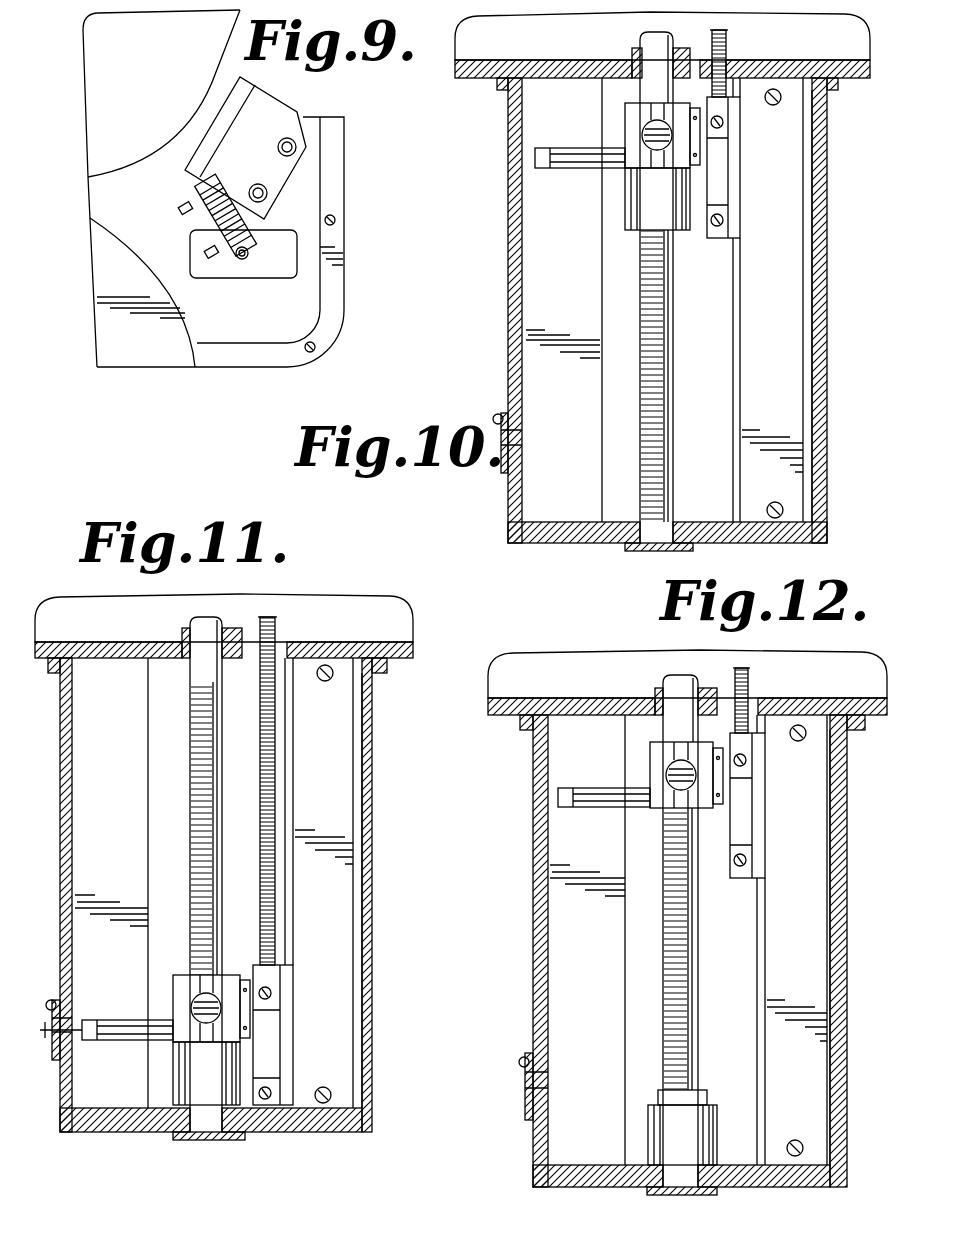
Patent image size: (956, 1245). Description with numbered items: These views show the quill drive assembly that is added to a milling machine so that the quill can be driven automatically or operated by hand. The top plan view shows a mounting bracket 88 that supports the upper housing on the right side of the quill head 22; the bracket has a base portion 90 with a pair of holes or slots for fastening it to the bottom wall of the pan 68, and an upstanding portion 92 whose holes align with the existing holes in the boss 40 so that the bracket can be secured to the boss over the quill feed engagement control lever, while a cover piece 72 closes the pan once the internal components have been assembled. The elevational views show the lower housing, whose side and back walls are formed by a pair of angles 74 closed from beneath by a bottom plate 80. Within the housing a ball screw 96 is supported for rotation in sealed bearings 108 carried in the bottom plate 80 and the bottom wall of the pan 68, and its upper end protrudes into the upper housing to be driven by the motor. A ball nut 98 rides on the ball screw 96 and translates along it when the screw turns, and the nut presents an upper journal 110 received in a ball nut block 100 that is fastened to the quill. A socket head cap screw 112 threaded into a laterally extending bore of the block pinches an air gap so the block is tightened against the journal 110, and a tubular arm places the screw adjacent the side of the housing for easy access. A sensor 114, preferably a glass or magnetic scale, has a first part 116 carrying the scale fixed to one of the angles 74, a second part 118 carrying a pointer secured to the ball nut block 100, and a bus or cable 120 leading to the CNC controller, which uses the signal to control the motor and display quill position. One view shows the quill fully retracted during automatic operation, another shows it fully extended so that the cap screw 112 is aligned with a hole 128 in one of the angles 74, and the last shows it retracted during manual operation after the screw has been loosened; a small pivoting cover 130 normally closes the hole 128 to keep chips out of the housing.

In FIG. 9, the quill head 22 is at (76, 33).
In FIG. 9, the boss 40 is at (200, 117).
In FIG. 9, the pan 68 is at (345, 337).
In FIG. 10, the pan 68 is at (860, 22).
In FIG. 11, the pan 68 is at (394, 596).
In FIG. 12, the pan 68 is at (878, 665).
In FIG. 9, the cover piece 72 is at (157, 358).
In FIG. 10, the angles 74 is at (508, 305).
In FIG. 11, the angles 74 is at (75, 817).
In FIG. 12, the angles 74 is at (537, 915).
In FIG. 10, the bottom plate 80 is at (578, 537).
In FIG. 11, the bottom plate 80 is at (150, 1133).
In FIG. 12, the bottom plate 80 is at (547, 1175).
In FIG. 9, the mounting bracket 88 is at (216, 197).
In FIG. 9, the base portion 90 is at (283, 178).
In FIG. 9, the upstanding portion 92 is at (190, 178).
In FIG. 10, the ball screw 96 is at (675, 293).
In FIG. 11, the ball screw 96 is at (192, 820).
In FIG. 12, the ball screw 96 is at (697, 980).
In FIG. 10, the ball nut 98 is at (633, 200).
In FIG. 11, the ball nut 98 is at (182, 1078).
In FIG. 12, the ball nut 98 is at (703, 1138).
In FIG. 10, the ball nut block 100 is at (633, 117).
In FIG. 11, the ball nut block 100 is at (180, 985).
In FIG. 12, the ball nut block 100 is at (655, 753).
In FIG. 10, the sealed bearings 108 is at (640, 52).
In FIG. 11, the sealed bearings 108 is at (185, 628).
In FIG. 12, the sealed bearings 108 is at (660, 682).
In FIG. 12, the upper journal 110 is at (708, 1100).
In FIG. 10, the socket head cap screw 112 is at (535, 160).
In FIG. 11, the socket head cap screw 112 is at (92, 1042).
In FIG. 12, the socket head cap screw 112 is at (567, 810).
In FIG. 10, the sensor 114 is at (815, 211).
In FIG. 11, the sensor 114 is at (365, 765).
In FIG. 12, the sensor 114 is at (836, 816).
In FIG. 10, the first part 116 is at (792, 397).
In FIG. 11, the first part 116 is at (343, 923).
In FIG. 12, the first part 116 is at (815, 1057).
In FIG. 10, the second part 118 is at (720, 182).
In FIG. 11, the second part 118 is at (267, 1047).
In FIG. 12, the second part 118 is at (743, 820).
In FIG. 9, the bus or cable 120 is at (246, 256).
In FIG. 10, the bus or cable 120 is at (727, 42).
In FIG. 11, the bus or cable 120 is at (278, 625).
In FIG. 12, the bus or cable 120 is at (752, 683).
In FIG. 10, the hole 128 is at (522, 462).
In FIG. 11, the hole 128 is at (67, 1047).
In FIG. 12, the hole 128 is at (545, 1103).
In FIG. 10, the cover 130 is at (502, 472).
In FIG. 11, the cover 130 is at (53, 997).
In FIG. 12, the cover 130 is at (525, 1085).